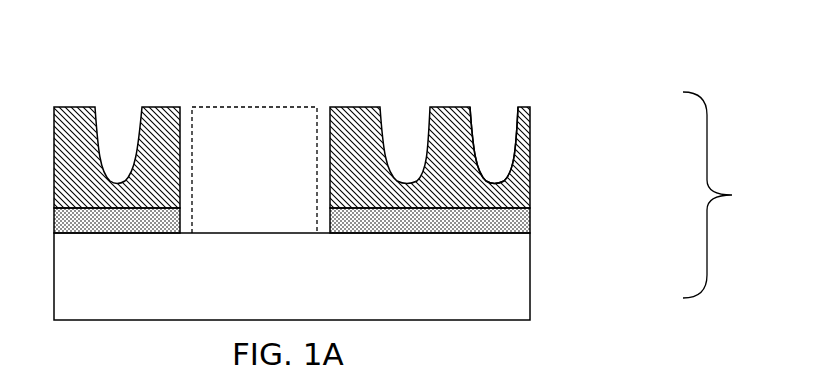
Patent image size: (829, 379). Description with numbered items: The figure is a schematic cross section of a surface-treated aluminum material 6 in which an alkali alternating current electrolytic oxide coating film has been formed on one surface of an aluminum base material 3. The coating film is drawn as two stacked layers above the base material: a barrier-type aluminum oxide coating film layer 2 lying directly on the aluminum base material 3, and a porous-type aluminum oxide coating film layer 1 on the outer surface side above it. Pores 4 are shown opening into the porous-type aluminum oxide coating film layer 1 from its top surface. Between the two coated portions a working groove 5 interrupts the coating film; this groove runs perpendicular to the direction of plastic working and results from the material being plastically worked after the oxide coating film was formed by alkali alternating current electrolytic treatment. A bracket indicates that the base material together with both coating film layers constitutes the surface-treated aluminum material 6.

The porous-type aluminum oxide coating film layer 1 is at (567, 204).
The barrier-type aluminum oxide coating film layer 2 is at (567, 236).
The aluminum base material 3 is at (567, 238).
The pores 4 is at (495, 133).
The working groove 5 is at (257, 155).
The surface-treated aluminum material 6 is at (725, 195).